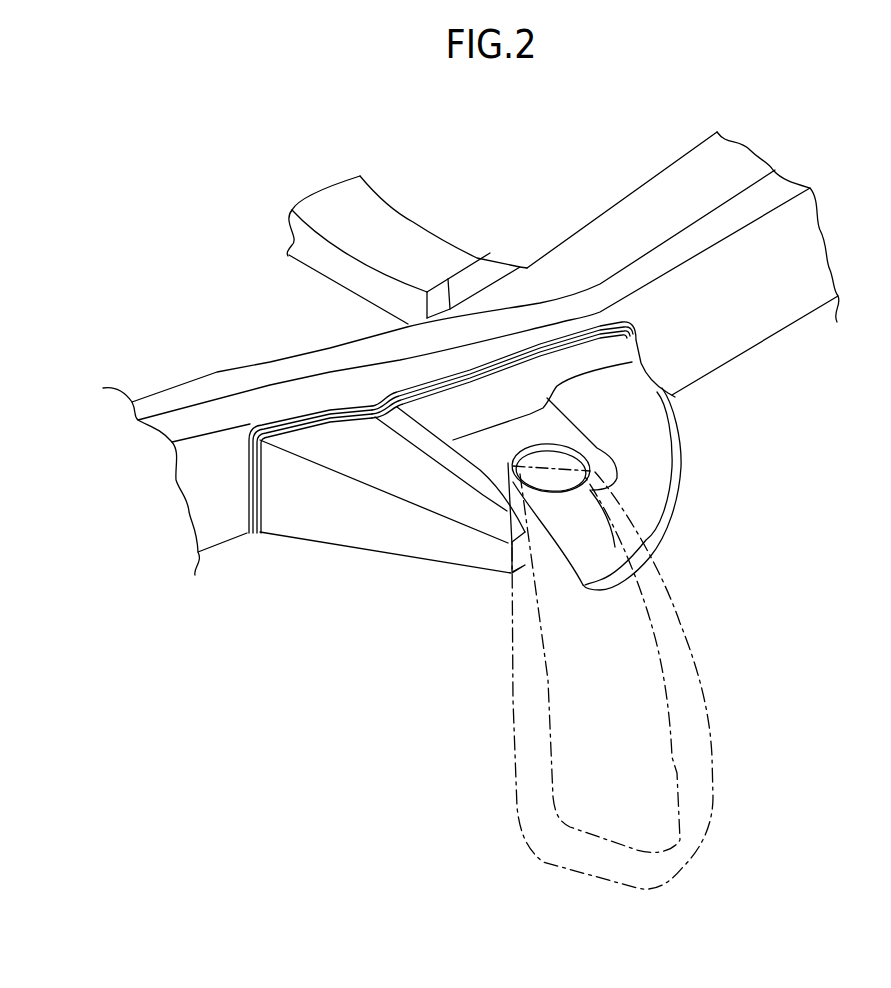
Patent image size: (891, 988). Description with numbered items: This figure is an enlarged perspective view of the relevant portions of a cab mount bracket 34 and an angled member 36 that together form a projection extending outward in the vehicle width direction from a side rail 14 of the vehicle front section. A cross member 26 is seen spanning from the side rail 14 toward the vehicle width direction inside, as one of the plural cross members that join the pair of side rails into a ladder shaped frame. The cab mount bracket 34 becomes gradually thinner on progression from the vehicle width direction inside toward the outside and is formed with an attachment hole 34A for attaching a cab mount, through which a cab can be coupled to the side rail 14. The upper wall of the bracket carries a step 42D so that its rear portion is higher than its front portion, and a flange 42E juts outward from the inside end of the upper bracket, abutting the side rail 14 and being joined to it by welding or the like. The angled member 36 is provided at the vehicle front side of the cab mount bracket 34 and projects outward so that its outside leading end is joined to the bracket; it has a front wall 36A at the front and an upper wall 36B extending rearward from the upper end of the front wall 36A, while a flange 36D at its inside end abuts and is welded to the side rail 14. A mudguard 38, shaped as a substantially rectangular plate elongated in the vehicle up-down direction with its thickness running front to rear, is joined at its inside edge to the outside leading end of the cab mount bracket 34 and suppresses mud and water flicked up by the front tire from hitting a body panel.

The side rail 14 is at (759, 350).
The cross member 26 is at (408, 219).
The cab mount bracket 34 is at (610, 476).
The attachment hole 34A is at (588, 477).
The angled member 36 is at (382, 478).
The front wall 36A is at (362, 557).
The upper wall 36B is at (355, 430).
The flange 36D is at (267, 420).
The mudguard 38 is at (713, 739).
The step 42D is at (595, 430).
The flange 42E is at (597, 322).